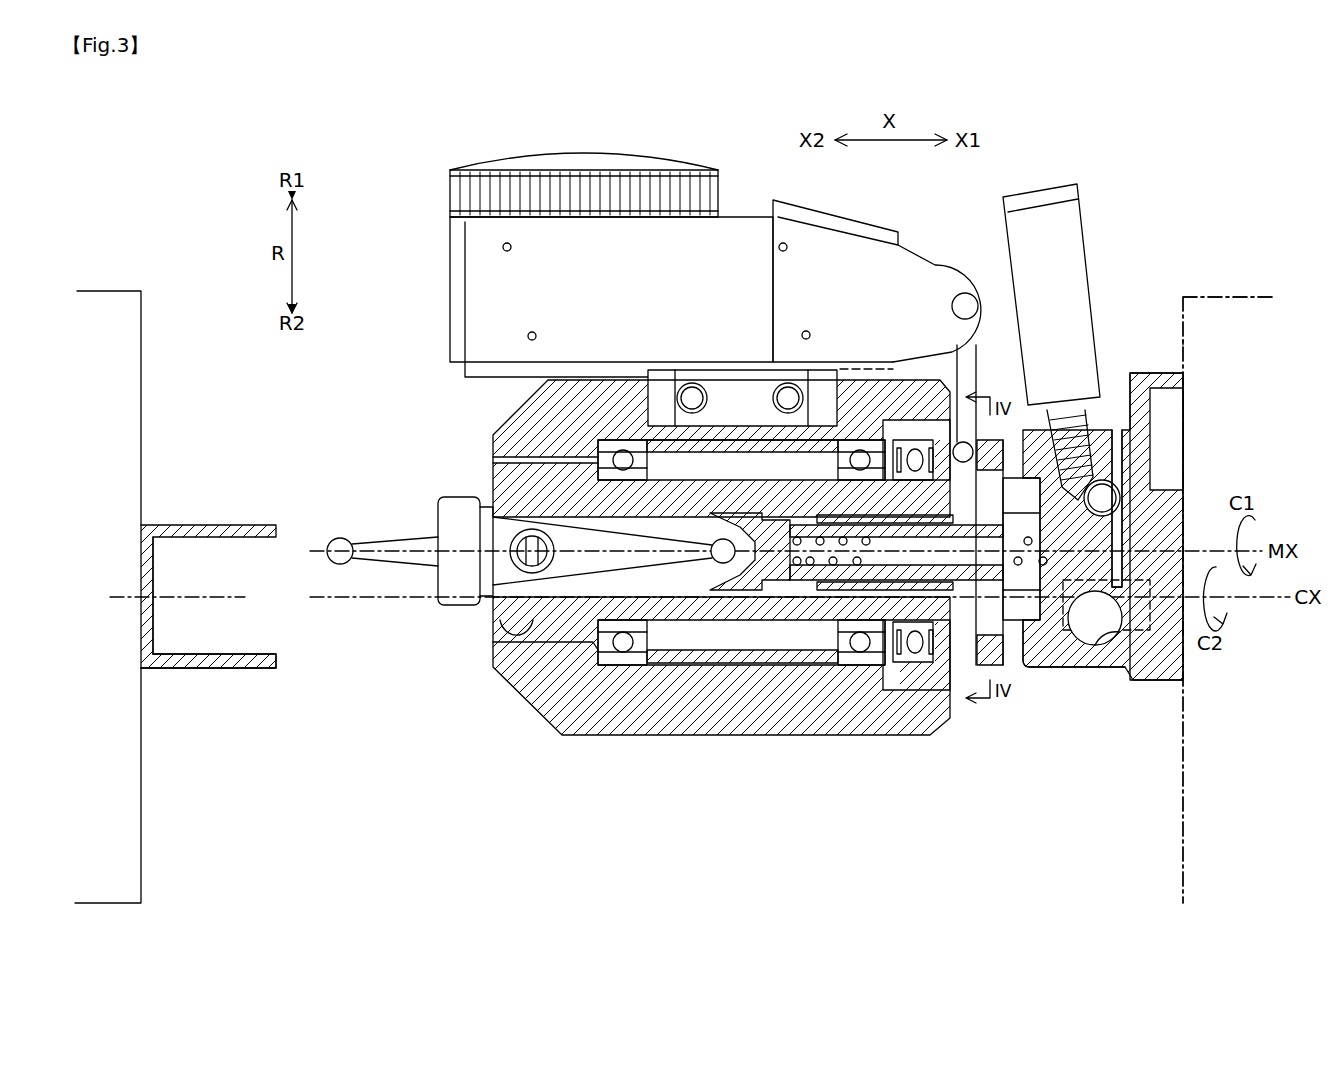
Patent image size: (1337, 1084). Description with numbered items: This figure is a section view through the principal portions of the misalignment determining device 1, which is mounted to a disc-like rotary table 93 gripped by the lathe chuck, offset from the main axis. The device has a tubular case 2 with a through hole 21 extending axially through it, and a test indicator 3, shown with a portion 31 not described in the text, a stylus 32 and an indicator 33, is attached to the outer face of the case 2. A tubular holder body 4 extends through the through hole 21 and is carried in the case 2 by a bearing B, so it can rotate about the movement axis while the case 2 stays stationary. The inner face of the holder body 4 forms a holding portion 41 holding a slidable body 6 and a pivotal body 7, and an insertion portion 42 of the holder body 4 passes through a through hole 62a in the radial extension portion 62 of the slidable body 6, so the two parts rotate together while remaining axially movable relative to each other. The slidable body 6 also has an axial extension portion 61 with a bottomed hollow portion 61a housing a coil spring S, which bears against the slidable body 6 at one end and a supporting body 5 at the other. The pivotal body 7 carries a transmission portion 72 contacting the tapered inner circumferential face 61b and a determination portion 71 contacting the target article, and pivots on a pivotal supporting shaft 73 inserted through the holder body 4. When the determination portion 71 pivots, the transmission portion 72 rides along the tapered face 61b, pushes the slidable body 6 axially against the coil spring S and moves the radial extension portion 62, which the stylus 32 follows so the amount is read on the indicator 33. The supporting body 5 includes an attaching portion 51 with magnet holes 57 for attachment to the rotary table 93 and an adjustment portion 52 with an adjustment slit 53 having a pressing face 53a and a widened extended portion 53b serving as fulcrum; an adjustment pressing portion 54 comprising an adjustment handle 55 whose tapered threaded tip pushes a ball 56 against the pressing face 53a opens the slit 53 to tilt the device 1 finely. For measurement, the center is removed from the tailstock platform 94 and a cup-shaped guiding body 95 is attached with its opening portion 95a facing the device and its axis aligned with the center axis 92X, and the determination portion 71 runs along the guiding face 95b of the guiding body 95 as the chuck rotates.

The misalignment determining device 1 is at (1143, 143).
The tubular case 2 is at (519, 715).
The through hole 21 is at (505, 628).
The test indicator 3 is at (685, 235).
The gauge body 31 is at (478, 285).
The stylus 32 is at (962, 366).
The indicator 33 is at (608, 163).
The holder body 4 is at (483, 478).
The holding portion 41 is at (728, 612).
The insertion portion 42 is at (1010, 625).
The supporting body 5 is at (1112, 680).
The attaching portion 51 is at (1163, 685).
The adjustment portion 52 is at (1072, 672).
The adjustment slit 53 is at (1110, 440).
The pressing face 53a is at (1105, 500).
The extended portion 53b is at (1102, 632).
The adjustment pressing portion 54 is at (1102, 400).
The adjustment handle 55 is at (1070, 226).
The ball 56 is at (1115, 482).
The magnet holes 57 is at (1172, 398).
The slidable body 6 is at (864, 566).
The axial extension portion 61 is at (882, 660).
The hollow portion 61a is at (823, 517).
The tapered inner circumferential face 61b is at (703, 598).
The radial extension portion 62 is at (963, 690).
The through hole 62a is at (1000, 438).
The pivotal body 7 is at (432, 495).
The determination portion 71 is at (336, 540).
The transmission portion 72 is at (700, 548).
The pivotal supporting shaft 73 is at (510, 553).
The rotary table 93 is at (1230, 305).
The tailstock platform 94 is at (141, 337).
The guiding body 95 is at (216, 516).
The opening portion 95a is at (205, 587).
The guiding face 95b is at (225, 660).
The center axis 92X is at (141, 597).
The bearing B is at (612, 445).
The coil spring S is at (802, 545).